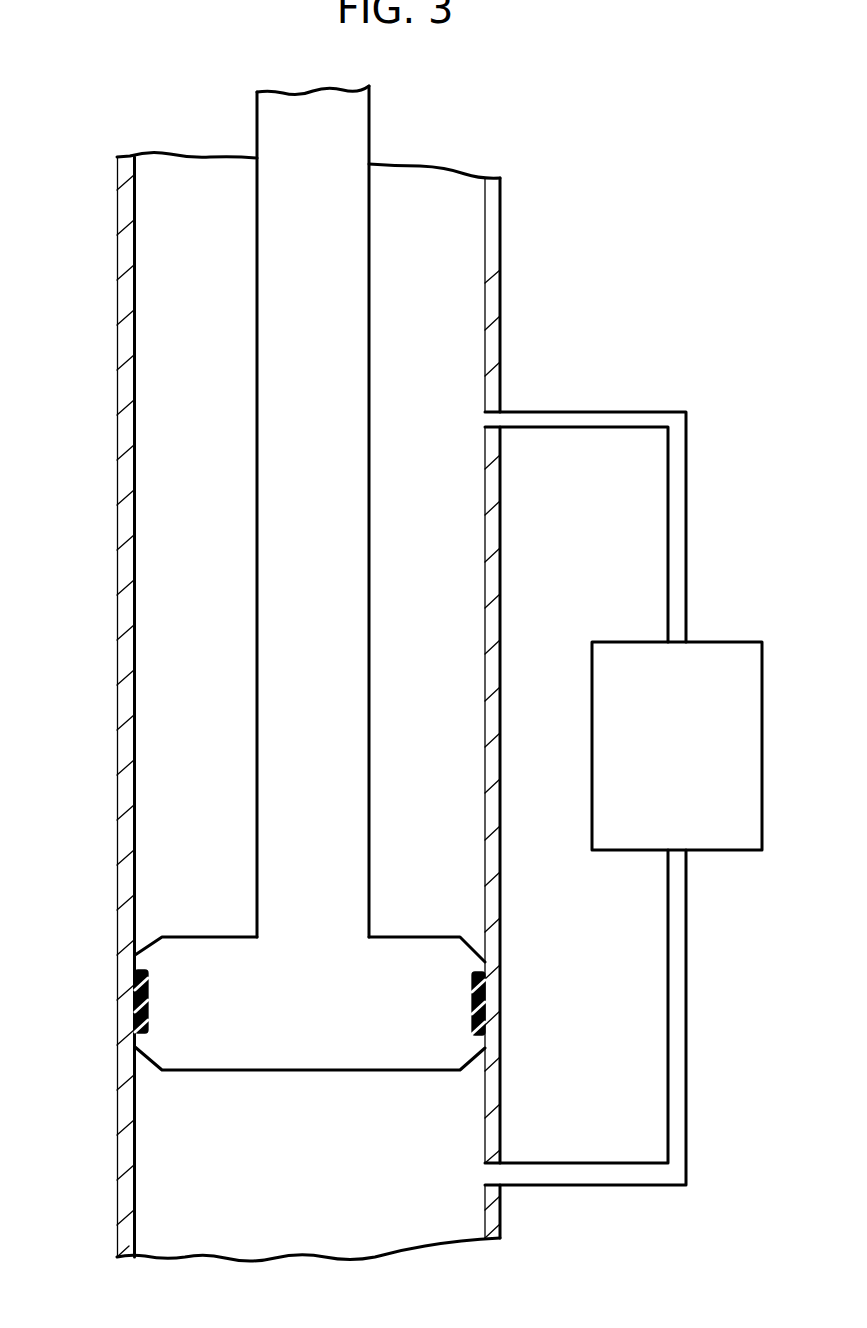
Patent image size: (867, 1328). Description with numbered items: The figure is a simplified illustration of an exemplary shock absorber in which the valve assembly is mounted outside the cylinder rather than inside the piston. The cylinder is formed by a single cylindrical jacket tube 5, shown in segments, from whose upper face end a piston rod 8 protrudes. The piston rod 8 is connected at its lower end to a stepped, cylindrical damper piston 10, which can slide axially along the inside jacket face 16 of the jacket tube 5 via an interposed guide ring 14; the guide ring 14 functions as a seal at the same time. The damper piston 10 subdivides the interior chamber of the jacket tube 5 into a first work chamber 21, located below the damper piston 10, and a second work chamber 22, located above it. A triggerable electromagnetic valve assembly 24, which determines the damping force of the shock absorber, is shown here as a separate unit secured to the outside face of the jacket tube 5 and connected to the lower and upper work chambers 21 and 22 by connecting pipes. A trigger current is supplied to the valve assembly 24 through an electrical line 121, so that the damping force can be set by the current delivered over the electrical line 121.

The jacket tube 5 is at (117, 420).
The piston rod 8 is at (270, 290).
The damper piston 10 is at (331, 1013).
The guide ring 14 is at (135, 1005).
The inside jacket face 16 is at (483, 322).
The first work chamber 21 is at (308, 1179).
The second work chamber 22 is at (448, 541).
The valve assembly 24 is at (690, 774).
The electrical line 121 is at (727, 642).